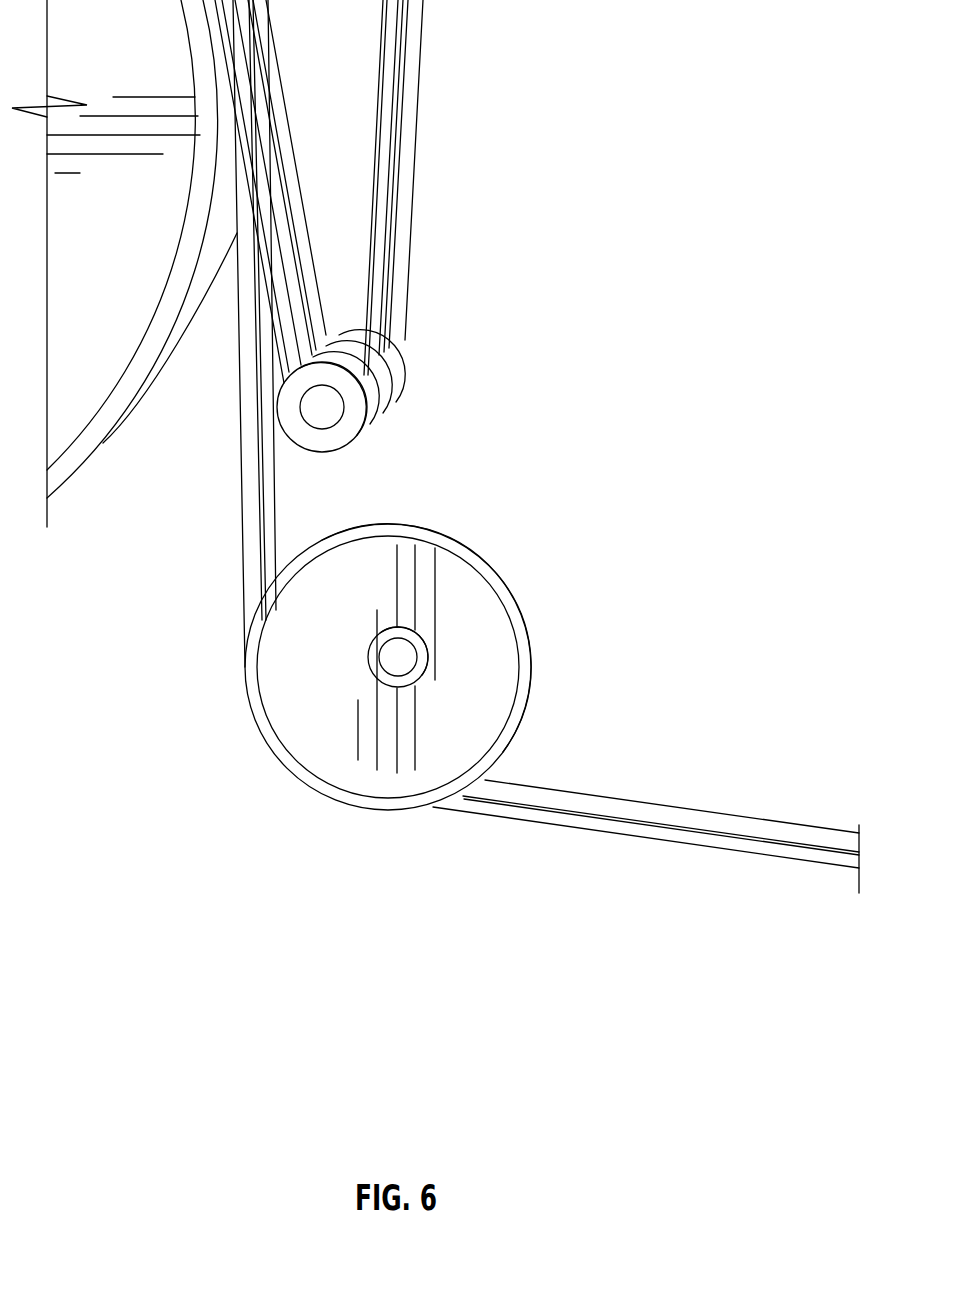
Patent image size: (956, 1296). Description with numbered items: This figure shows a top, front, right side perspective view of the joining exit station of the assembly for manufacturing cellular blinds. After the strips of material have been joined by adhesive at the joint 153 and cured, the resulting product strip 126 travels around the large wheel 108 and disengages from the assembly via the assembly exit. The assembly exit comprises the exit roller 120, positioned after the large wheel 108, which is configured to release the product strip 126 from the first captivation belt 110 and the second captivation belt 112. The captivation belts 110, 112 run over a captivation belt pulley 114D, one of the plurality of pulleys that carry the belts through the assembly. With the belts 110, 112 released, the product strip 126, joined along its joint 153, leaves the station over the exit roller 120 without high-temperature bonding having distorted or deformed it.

The large wheel 108 is at (73, 467).
The first captivation belt 110 is at (408, 176).
The second captivation belt 112 is at (380, 228).
The captivation belt pulley 114D is at (405, 336).
The exit roller 120 is at (512, 552).
The product strip 126 is at (253, 535).
The joint 153 is at (259, 475).